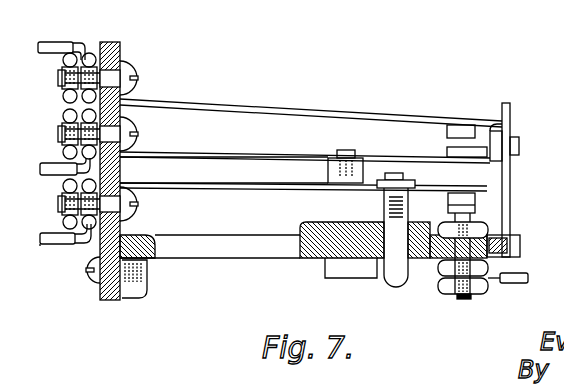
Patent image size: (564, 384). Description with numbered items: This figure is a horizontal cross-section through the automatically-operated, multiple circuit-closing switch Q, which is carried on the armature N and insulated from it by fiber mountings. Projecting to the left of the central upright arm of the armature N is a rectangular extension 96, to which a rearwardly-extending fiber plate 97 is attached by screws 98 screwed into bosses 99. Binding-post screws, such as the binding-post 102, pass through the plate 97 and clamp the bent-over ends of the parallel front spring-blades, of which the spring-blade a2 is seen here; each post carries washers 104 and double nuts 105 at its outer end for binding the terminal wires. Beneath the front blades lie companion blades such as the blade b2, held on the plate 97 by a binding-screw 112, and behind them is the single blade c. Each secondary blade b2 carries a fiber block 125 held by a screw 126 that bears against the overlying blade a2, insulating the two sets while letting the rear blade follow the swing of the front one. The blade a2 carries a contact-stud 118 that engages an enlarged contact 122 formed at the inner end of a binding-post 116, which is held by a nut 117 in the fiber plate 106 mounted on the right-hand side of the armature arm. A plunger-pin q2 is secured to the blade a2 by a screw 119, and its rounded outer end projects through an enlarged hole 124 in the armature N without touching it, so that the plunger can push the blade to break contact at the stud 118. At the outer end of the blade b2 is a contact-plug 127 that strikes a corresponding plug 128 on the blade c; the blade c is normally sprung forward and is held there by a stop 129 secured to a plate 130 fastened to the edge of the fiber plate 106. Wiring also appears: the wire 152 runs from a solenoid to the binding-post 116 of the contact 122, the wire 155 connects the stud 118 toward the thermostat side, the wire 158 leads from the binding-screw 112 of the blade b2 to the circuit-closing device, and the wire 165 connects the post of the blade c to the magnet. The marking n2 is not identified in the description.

The rectangular extension 96 is at (245, 246).
The fiber plate 97 is at (122, 46).
The screws 98 is at (96, 283).
The bosses 99 is at (135, 298).
The binding-post 102 is at (60, 206).
The washers 104 is at (103, 42).
The double nuts 105 is at (69, 104).
The fiber plate 106 is at (520, 251).
The binding-screw 112 is at (59, 80).
The binding-posts 116 is at (462, 300).
The nuts 117 is at (440, 286).
The contact-studs 118 is at (476, 199).
The screws 119 is at (404, 176).
The enlarged contact 122 is at (476, 209).
The enlarged holes 124 is at (362, 225).
The fiber block 125 is at (325, 170).
The screw 126 is at (340, 150).
The contact-plugs 127 is at (447, 152).
The contact-plugs 128 is at (447, 132).
The stop 129 is at (491, 137).
The plate 130 is at (504, 103).
The wire 152 is at (512, 284).
The wire 155 is at (50, 249).
The wire 158 is at (68, 180).
The wire 165 is at (55, 42).
The single blade c is at (240, 110).
The multiple circuit-closing switch q is at (333, 96).
The companion spring-blade b2 is at (232, 151).
The spring-blade a2 is at (240, 192).
The armature N is at (290, 224).
The bracket n2 is at (354, 279).
The plunger-pin q2 is at (394, 283).